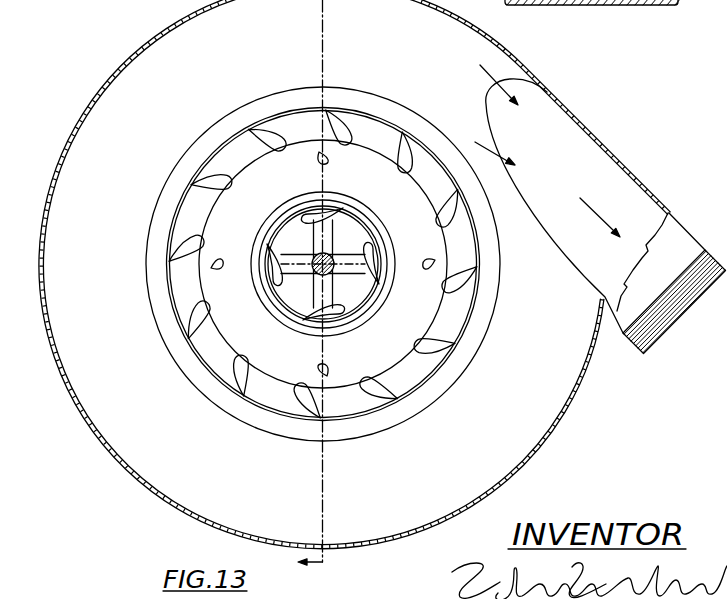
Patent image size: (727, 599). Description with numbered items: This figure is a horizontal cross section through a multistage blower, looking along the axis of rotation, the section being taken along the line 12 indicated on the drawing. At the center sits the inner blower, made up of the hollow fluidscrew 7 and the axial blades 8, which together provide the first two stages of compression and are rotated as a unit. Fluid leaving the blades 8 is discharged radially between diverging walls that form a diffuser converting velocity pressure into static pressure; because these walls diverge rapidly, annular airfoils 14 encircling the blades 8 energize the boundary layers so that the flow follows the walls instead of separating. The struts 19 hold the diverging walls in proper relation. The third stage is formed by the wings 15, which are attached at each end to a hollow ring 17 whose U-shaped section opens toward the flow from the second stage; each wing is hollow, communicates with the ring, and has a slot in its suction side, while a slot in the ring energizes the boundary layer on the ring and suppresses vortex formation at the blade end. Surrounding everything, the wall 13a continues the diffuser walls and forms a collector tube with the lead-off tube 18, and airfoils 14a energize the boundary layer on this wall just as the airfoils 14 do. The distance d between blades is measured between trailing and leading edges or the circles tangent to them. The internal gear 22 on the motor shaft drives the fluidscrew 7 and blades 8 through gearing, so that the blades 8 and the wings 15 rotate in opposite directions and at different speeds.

The wall 13a is at (99, 86).
The airfoils 14a is at (232, 122).
The hollow ring 17 is at (300, 122).
The wings 15 is at (403, 142).
The rotor 12 is at (400, 157).
The struts 19 is at (332, 157).
The distance d is at (285, 206).
The annular airfoils 14 is at (369, 217).
The hollow fluidscrew 7 is at (298, 266).
The axial blades 8 is at (309, 296).
The lead-off tube 18 is at (634, 170).
The internal gear 22 is at (652, 3).